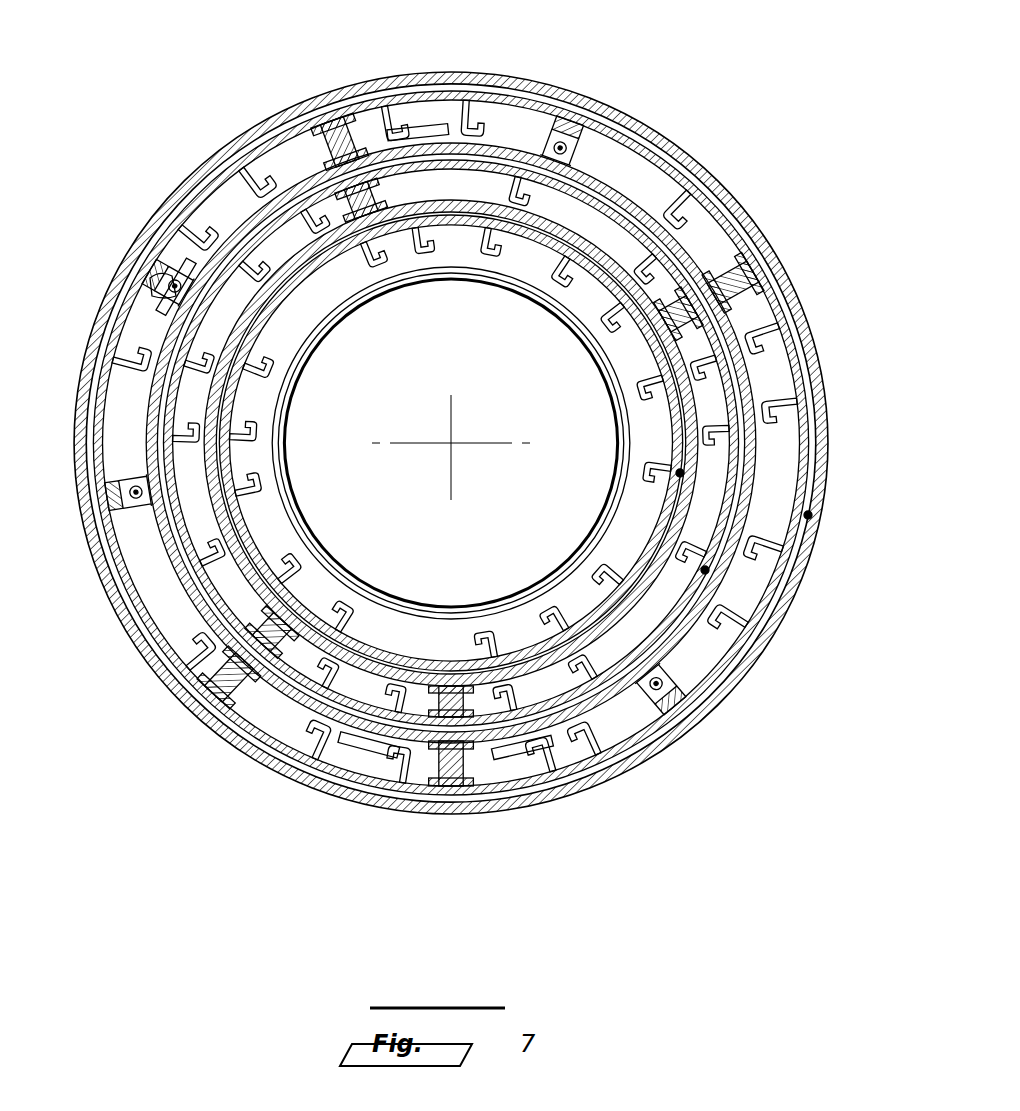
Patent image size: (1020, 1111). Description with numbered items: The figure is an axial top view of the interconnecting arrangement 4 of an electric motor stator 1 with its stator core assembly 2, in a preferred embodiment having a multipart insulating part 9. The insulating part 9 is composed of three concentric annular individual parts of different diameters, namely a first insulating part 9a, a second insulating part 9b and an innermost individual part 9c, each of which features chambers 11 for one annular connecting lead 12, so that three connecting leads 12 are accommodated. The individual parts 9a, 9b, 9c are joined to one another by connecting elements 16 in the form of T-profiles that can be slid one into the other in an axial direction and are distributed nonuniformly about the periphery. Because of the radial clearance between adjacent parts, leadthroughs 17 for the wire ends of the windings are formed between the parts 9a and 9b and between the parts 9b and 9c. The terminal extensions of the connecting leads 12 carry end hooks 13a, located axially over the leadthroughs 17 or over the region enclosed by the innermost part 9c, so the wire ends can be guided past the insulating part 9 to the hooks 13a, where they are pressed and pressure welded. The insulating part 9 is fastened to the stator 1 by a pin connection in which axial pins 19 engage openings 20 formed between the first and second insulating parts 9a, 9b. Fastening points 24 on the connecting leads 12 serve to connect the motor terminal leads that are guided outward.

The stator 1 is at (580, 337).
The stator core assembly 2 is at (395, 262).
The interconnecting arrangement 4 is at (214, 180).
The insulating part 9 is at (790, 250).
The first insulating part 9a is at (742, 645).
The second insulating part 9b is at (738, 362).
The innermost individual part 9c is at (640, 400).
The chambers 11 is at (270, 460).
The connecting lead 12 is at (125, 395).
The end hooks 13a is at (486, 114).
The connecting elements 16 is at (264, 122).
The leadthroughs 17 is at (290, 212).
The axial pins 19 is at (566, 145).
The openings 20 is at (168, 325).
The fastening points 24 is at (683, 473).